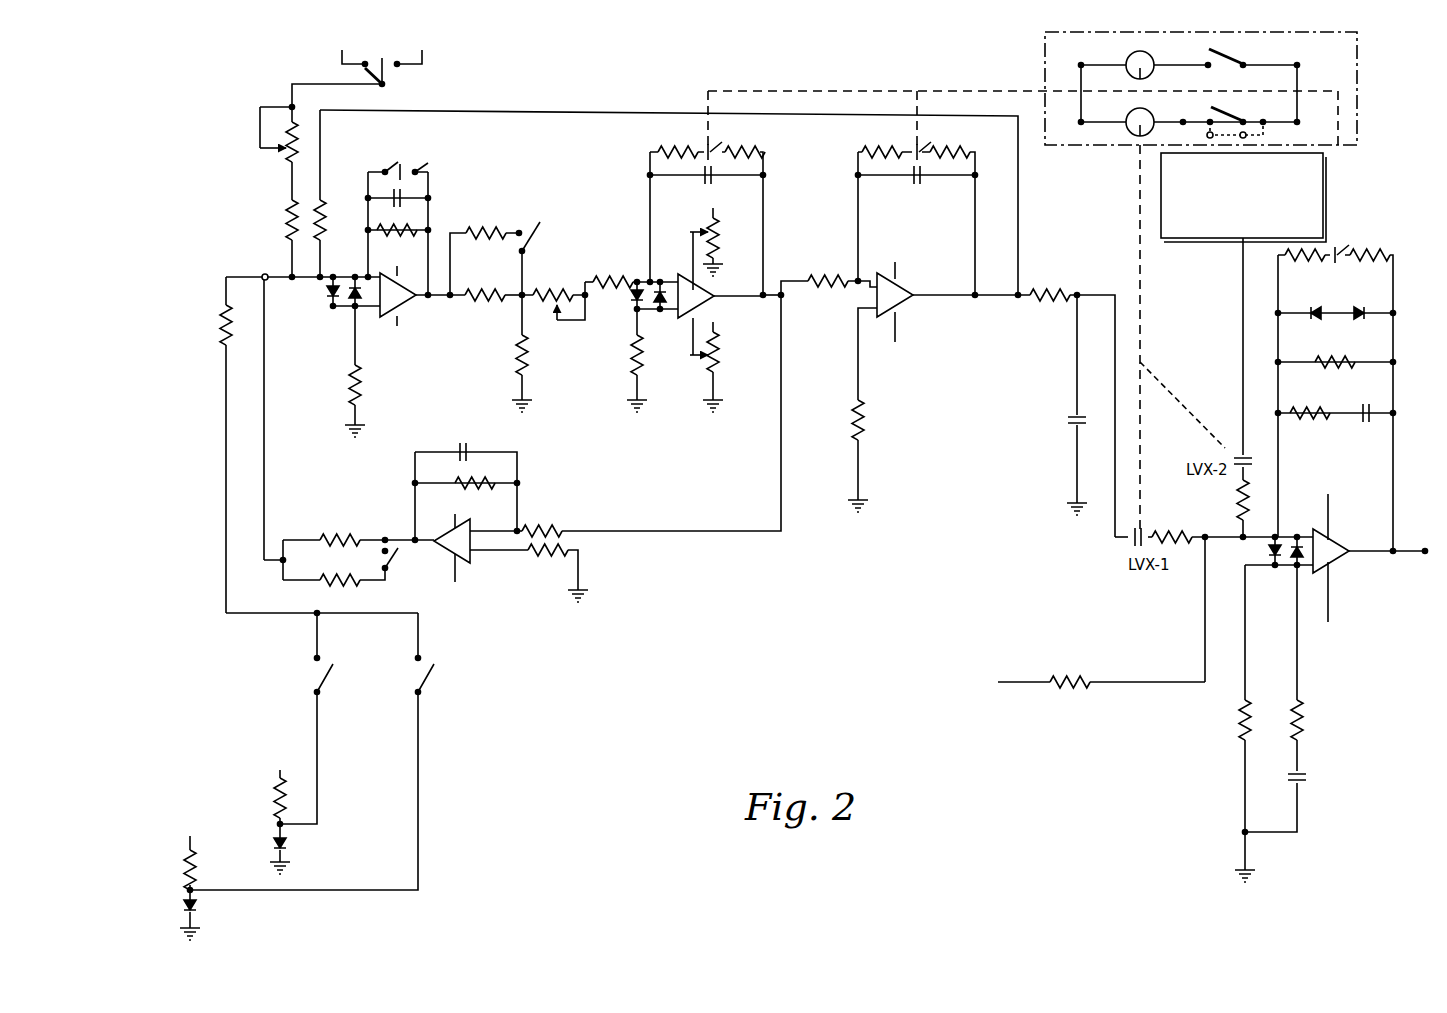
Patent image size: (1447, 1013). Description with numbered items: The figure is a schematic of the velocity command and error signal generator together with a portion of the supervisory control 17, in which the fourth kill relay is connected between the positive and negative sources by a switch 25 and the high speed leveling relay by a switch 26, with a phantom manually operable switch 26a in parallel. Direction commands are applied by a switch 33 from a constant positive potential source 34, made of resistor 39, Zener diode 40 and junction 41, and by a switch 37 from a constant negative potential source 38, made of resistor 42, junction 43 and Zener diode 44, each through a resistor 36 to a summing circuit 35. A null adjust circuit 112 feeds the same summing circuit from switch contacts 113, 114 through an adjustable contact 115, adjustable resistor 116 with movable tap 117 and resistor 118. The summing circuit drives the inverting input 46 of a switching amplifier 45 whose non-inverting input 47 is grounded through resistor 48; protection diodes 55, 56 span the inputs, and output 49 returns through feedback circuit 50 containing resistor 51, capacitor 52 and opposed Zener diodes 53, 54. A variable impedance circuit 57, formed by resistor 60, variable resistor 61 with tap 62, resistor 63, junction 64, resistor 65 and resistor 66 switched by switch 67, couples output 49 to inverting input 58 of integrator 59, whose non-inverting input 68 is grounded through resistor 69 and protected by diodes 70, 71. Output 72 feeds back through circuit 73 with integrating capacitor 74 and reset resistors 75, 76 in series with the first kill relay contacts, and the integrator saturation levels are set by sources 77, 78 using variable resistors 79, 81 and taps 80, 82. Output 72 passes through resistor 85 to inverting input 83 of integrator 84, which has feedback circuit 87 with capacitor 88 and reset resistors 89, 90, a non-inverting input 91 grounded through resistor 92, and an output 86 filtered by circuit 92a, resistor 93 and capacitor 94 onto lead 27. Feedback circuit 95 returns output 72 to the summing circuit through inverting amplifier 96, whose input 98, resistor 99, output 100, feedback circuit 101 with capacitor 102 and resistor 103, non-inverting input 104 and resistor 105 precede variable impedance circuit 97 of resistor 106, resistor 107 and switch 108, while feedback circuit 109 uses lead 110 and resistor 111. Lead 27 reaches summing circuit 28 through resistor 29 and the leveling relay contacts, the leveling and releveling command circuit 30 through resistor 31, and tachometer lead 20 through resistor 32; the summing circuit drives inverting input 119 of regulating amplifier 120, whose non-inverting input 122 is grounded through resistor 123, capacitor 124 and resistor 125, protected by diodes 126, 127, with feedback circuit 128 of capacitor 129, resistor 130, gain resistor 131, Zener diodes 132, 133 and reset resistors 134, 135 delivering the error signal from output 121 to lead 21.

The supervisory control 17 is at (1357, 96).
The lead 20 is at (1029, 686).
The lead 21 is at (1408, 558).
The switch 25 is at (1224, 57).
The switch 26 is at (1238, 118).
The manually operable switch 26a is at (1253, 135).
The lead 27 is at (1113, 520).
The summing circuit 28 is at (1220, 542).
The resistor 29 is at (1180, 520).
The leveling and releveling command circuit 30 is at (1323, 190).
The resistor 31 is at (1240, 499).
The resistor 32 is at (1076, 680).
The switch 33 is at (336, 684).
The constant positive potential voltage source 34 is at (248, 798).
The summing circuit 35 is at (302, 282).
The resistor 36 is at (226, 322).
The switch 37 is at (440, 684).
The constant negative potential voltage source 38 is at (180, 887).
The resistor 39 is at (275, 790).
The Zener diode 40 is at (292, 845).
The junction circuit 41 is at (277, 824).
The resistor 42 is at (185, 862).
The junction circuit 43 is at (195, 893).
The Zener diode 44 is at (182, 912).
The switching amplifier 45 is at (399, 283).
The inverting input 46 is at (365, 273).
The non-inverting input 47 is at (402, 312).
The resistor 48 is at (352, 393).
The output circuit 49 is at (442, 300).
The feedback circuit 50 is at (440, 192).
The resistor 51 is at (395, 228).
The capacitor 52 is at (398, 192).
The Zener diode 53 is at (415, 168).
The Zener diode 54 is at (385, 168).
The diode 55 is at (330, 307).
The diode 56 is at (357, 322).
The variable impedance circuit 57 is at (532, 262).
The inverting input 58 is at (641, 274).
The integrator 59 is at (720, 296).
The resistor 60 is at (492, 300).
The variable resistor 61 is at (582, 292).
The adjustable tap 62 is at (580, 322).
The resistor 63 is at (608, 280).
The junction circuit 64 is at (553, 309).
The resistor 65 is at (524, 352).
The resistor 66 is at (483, 228).
The manually operable switch 67 is at (528, 232).
The non-inverting input 68 is at (662, 312).
The resistor 69 is at (652, 355).
The diode 70 is at (636, 304).
The diode 71 is at (660, 282).
The output circuit 72 is at (760, 292).
The feedback circuit 73 is at (646, 166).
The integrating capacitor 74 is at (702, 185).
The resistor 75 is at (662, 147).
The resistor 76 is at (764, 150).
The adjustable positive potential voltage source 77 is at (720, 234).
The adjustable negative potential voltage source 78 is at (724, 372).
The variable resistor 79 is at (720, 240).
The output tap 80 is at (698, 230).
The variable resistor 81 is at (718, 340).
The output tap 82 is at (710, 360).
The inverting input 83 is at (852, 288).
The integrator 84 is at (922, 308).
The resistor 85 is at (813, 275).
The output circuit 86 is at (910, 292).
The feedback circuit 87 is at (852, 165).
The integrating capacitor 88 is at (912, 188).
The resistor 89 is at (885, 150).
The resistor 90 is at (970, 150).
The non-inverting input 91 is at (857, 325).
The resistor 92 is at (862, 404).
The noise suppression filtering circuit 92a is at (1066, 432).
The resistor 93 is at (1050, 290).
The capacitor 94 is at (1067, 416).
The closed loop feedback circuit 95 is at (605, 548).
The inverting amplifier circuit 96 is at (592, 505).
The selectively variable impedance circuit 97 is at (352, 528).
The inverting input circuit 98 is at (479, 548).
The resistor 99 is at (546, 526).
The output circuit 100 is at (390, 553).
The feedback circuit 101 is at (410, 467).
The capacitor 102 is at (463, 448).
The resistor 103 is at (470, 477).
The non-inverting input 104 is at (502, 554).
The resistor 105 is at (575, 600).
The resistor 106 is at (335, 535).
The resistor 107 is at (332, 585).
The manually operable switch 108 is at (392, 576).
The closed loop feedback circuit 109 is at (620, 98).
The lead 110 is at (563, 111).
The resistor 111 is at (320, 212).
The null adjust circuit 112 is at (266, 167).
The switch contact 113 is at (338, 64).
The switch contact 114 is at (410, 68).
The adjustable contact 115 is at (395, 76).
The adjustable resistor 116 is at (292, 129).
The movable tap 117 is at (260, 130).
The resistor 118 is at (292, 218).
The inverting input 119 is at (1305, 536).
The regulating amplifier 120 is at (1340, 568).
The output circuit 121 is at (1362, 555).
The non-inverting input 122 is at (1285, 571).
The resistor 123 is at (1302, 720).
The capacitor 124 is at (1306, 778).
The resistor 125 is at (1240, 723).
The diode 126 is at (1270, 553).
The diode 127 is at (1285, 534).
The feedback circuit 128 is at (1395, 400).
The capacitor 129 is at (1367, 407).
The resistor 130 is at (1312, 407).
The gain setting resistor 131 is at (1320, 360).
The Zener diode 132 is at (1314, 306).
The Zener diode 133 is at (1365, 306).
The resistor 134 is at (1285, 255).
The resistor 135 is at (1338, 263).